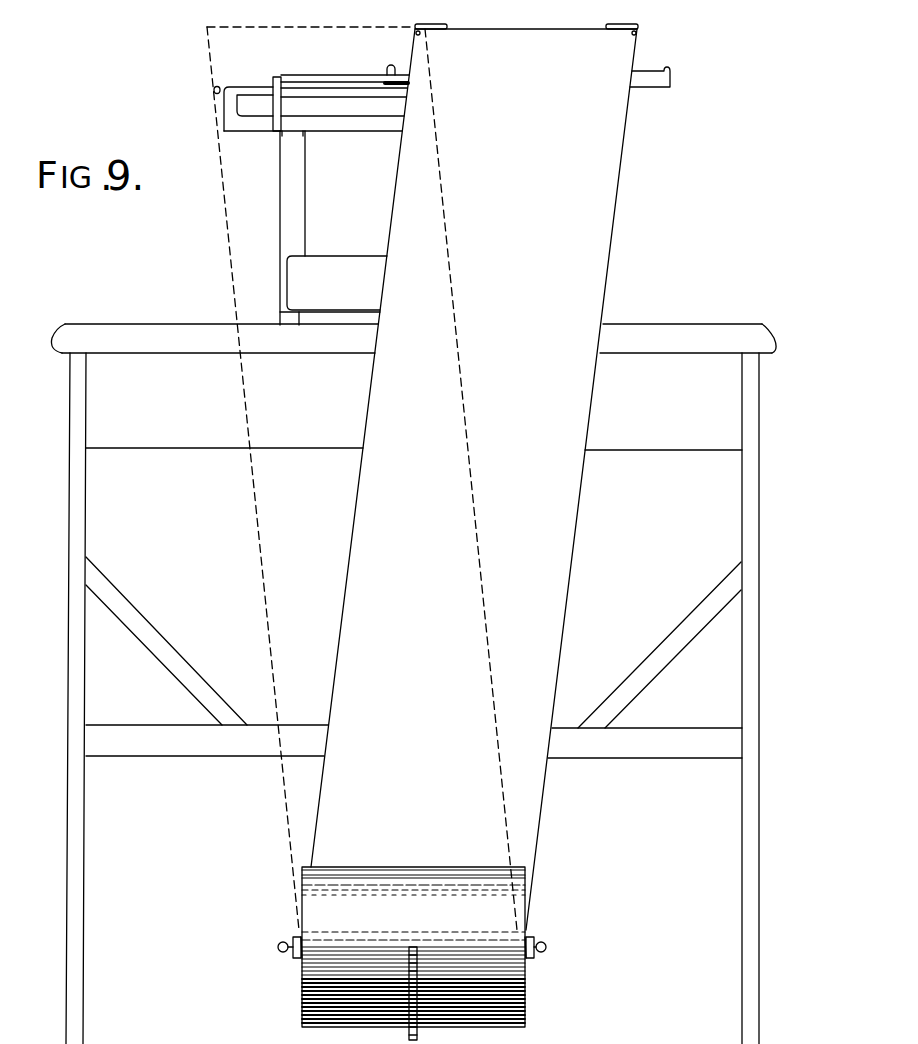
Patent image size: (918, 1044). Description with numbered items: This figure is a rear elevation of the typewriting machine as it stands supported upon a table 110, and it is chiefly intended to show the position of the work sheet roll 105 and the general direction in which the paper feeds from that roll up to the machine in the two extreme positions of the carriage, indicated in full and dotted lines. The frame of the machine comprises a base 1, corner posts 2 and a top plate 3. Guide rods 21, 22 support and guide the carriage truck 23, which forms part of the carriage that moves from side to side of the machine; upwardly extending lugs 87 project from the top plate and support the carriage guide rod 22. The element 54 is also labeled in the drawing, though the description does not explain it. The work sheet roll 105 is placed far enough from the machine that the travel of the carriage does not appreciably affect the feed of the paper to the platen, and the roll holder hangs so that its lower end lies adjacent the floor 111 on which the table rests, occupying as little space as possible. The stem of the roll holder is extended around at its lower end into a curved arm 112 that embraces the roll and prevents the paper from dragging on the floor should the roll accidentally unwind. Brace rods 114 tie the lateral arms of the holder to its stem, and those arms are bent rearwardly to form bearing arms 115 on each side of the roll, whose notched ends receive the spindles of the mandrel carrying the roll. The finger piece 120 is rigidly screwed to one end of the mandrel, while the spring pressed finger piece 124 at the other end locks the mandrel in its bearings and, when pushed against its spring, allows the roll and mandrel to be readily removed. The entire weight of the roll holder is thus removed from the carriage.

The base 1 is at (333, 290).
The corner posts 2 is at (292, 228).
The top plate 3 is at (347, 127).
The guide rod 21 is at (253, 85).
The guide rod 22 is at (341, 78).
The carriage truck 23 is at (652, 80).
The chute 54 is at (612, 222).
The lugs 87 is at (273, 100).
The work sheet roll 105 is at (418, 874).
The table 110 is at (413, 541).
The floor 111 is at (220, 1043).
The curved arm 112 is at (414, 946).
The rods 114 is at (297, 937).
The bearing arms 115 is at (297, 958).
The finger piece 120 is at (274, 957).
The spring pressed finger piece 124 is at (543, 945).